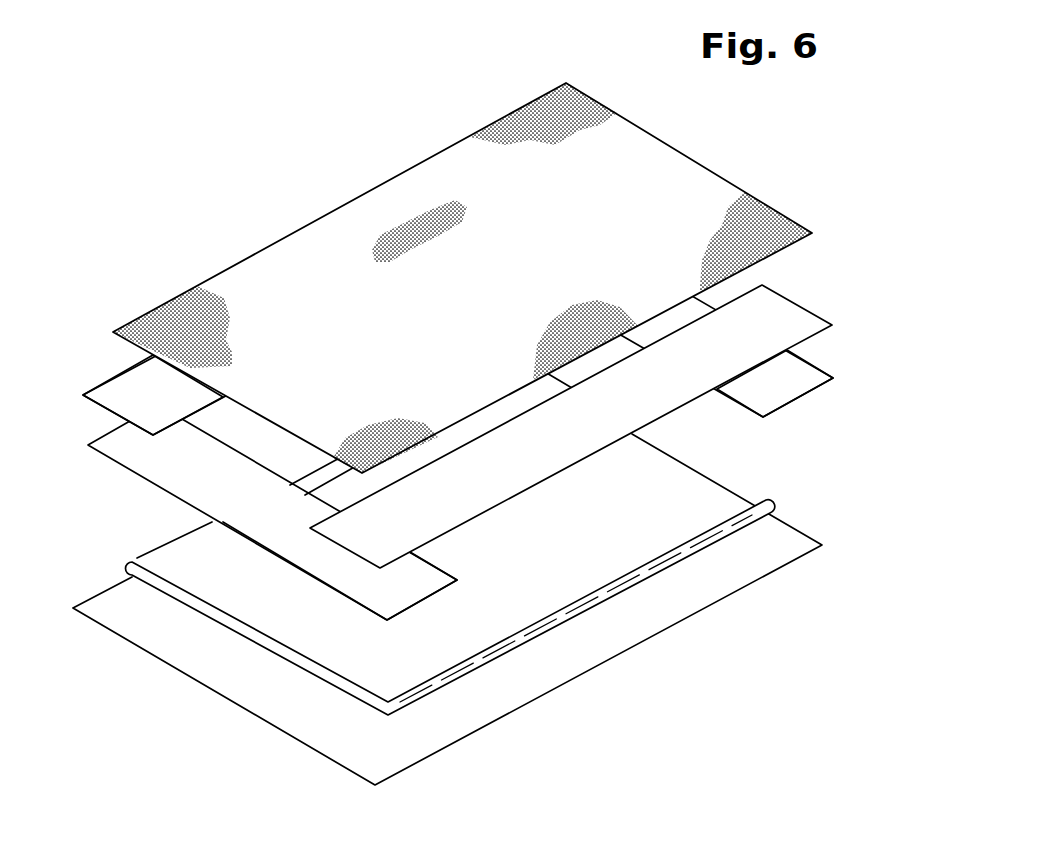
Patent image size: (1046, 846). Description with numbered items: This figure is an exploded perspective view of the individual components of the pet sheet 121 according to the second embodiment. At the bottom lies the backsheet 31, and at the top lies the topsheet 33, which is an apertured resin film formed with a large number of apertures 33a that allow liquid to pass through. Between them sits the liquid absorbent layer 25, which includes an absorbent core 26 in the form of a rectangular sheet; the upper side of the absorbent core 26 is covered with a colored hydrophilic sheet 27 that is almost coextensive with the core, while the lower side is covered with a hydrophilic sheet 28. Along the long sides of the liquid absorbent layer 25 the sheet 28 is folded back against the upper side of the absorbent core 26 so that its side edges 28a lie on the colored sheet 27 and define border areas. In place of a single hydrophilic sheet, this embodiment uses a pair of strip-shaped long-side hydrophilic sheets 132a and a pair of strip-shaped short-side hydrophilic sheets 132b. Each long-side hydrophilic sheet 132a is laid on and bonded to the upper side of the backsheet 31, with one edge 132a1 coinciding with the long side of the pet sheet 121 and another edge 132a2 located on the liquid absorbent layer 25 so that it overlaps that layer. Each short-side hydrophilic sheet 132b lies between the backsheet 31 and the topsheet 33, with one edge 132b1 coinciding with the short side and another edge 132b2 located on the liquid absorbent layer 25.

The pet sheet 121 is at (620, 82).
The topsheet 33 is at (485, 400).
The apertures 33a is at (425, 217).
The long-side hydrophilic sheet 132a is at (103, 392).
The edge of long-side hydrophilic sheet 132a1 is at (118, 370).
The edge of long-side hydrophilic sheet 132a2 is at (212, 405).
The short-side hydrophilic sheet 132b is at (127, 455).
The edge of short-side hydrophilic sheet 132b1 is at (287, 563).
The edge of short-side hydrophilic sheet 132b2 is at (234, 437).
The colored hydrophilic sheet 27 is at (188, 580).
The hydrophilic sheet 28 is at (353, 700).
The side edges of hydrophilic sheet 28a is at (203, 542).
The liquid absorbent layer 25 is at (315, 647).
The absorbent core 26 is at (327, 677).
The backsheet 31 is at (520, 700).